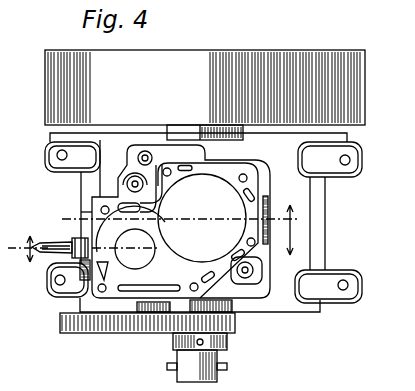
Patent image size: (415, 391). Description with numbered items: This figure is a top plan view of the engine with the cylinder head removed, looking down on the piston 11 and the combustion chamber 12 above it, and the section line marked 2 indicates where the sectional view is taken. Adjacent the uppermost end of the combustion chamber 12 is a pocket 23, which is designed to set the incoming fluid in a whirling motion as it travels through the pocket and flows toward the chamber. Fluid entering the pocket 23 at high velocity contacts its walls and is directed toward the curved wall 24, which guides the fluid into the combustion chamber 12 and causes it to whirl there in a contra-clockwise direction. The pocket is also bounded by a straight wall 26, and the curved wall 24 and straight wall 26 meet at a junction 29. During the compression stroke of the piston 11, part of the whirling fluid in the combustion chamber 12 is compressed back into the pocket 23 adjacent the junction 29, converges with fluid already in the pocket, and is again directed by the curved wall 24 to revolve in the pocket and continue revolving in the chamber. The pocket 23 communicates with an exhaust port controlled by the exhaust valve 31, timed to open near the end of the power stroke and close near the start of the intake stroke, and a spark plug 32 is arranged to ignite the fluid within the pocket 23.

The section line 2- 2 is at (148, 226).
The piston 11 is at (262, 290).
The combustion chamber 12 is at (202, 218).
The pocket 23 is at (145, 275).
The curved wall 24 is at (155, 333).
The straight wall 26 is at (118, 204).
The junction 29 is at (162, 219).
The exhaust valve 31 is at (127, 263).
The spark plug 32 is at (56, 242).